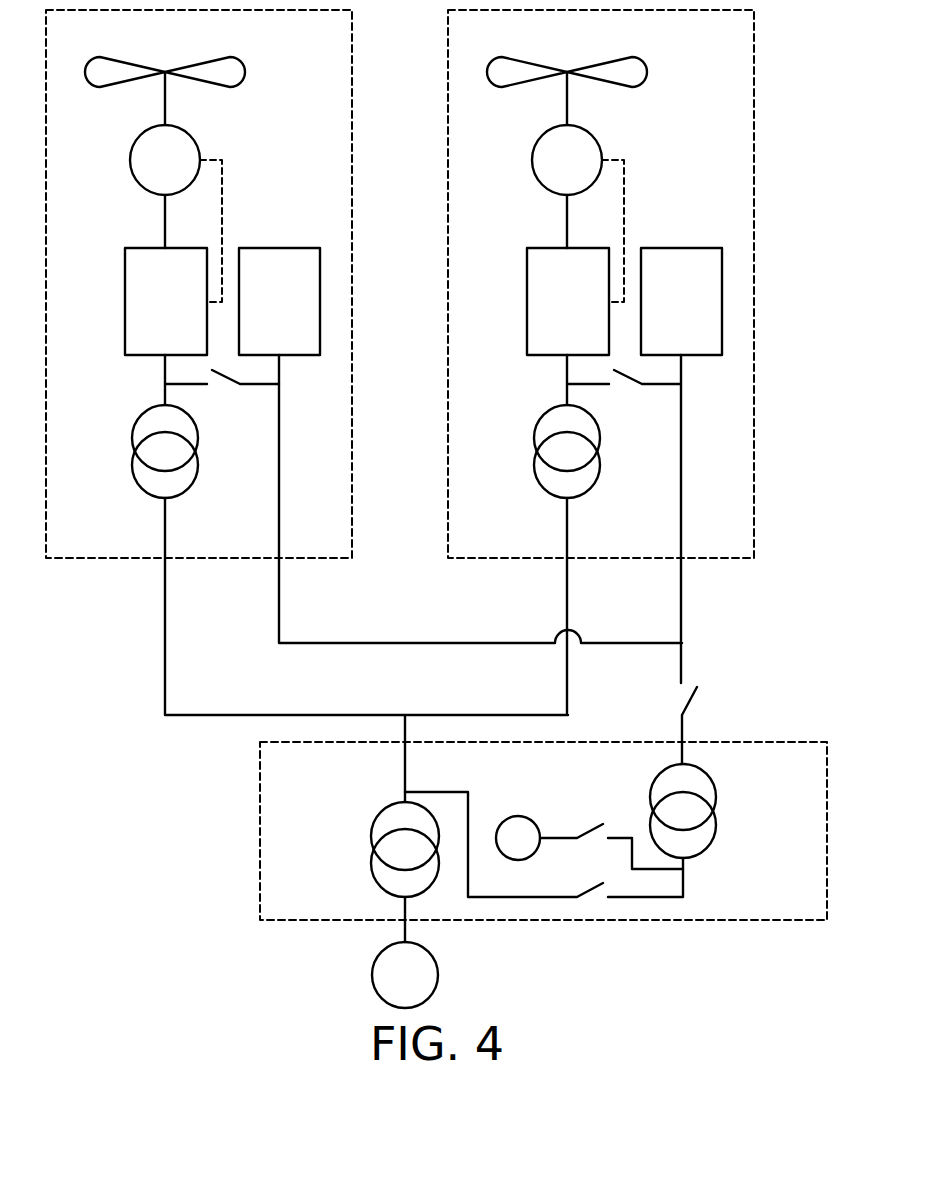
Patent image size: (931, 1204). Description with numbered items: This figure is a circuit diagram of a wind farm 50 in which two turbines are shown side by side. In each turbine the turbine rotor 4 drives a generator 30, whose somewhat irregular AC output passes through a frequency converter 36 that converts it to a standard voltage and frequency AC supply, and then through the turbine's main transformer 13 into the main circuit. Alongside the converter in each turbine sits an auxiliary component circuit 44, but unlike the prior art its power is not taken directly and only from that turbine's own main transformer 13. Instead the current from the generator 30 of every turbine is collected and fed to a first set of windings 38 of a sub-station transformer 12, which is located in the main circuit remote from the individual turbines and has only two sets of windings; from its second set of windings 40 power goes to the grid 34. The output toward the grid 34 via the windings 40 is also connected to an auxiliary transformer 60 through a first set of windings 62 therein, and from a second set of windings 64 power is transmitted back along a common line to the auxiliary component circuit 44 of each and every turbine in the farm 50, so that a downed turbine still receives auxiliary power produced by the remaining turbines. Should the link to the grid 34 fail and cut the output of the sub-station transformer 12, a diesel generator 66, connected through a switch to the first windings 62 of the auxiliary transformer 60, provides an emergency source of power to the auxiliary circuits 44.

The turbine rotor 4 is at (253, 72).
The generator 30 is at (70, 175).
The frequency converter 36 is at (70, 315).
The auxiliary component circuit 44 is at (295, 248).
The main transformer 13 is at (70, 467).
The wind farm 50 is at (72, 683).
The sub-station transformer 12 is at (276, 865).
The first set of windings 38 is at (374, 820).
The second set of windings 40 is at (374, 878).
The diesel generator 66 is at (518, 816).
The second set of windings 64 is at (714, 782).
The first set of windings 62 is at (714, 838).
The auxiliary transformer 60 is at (779, 827).
The grid 34 is at (372, 975).